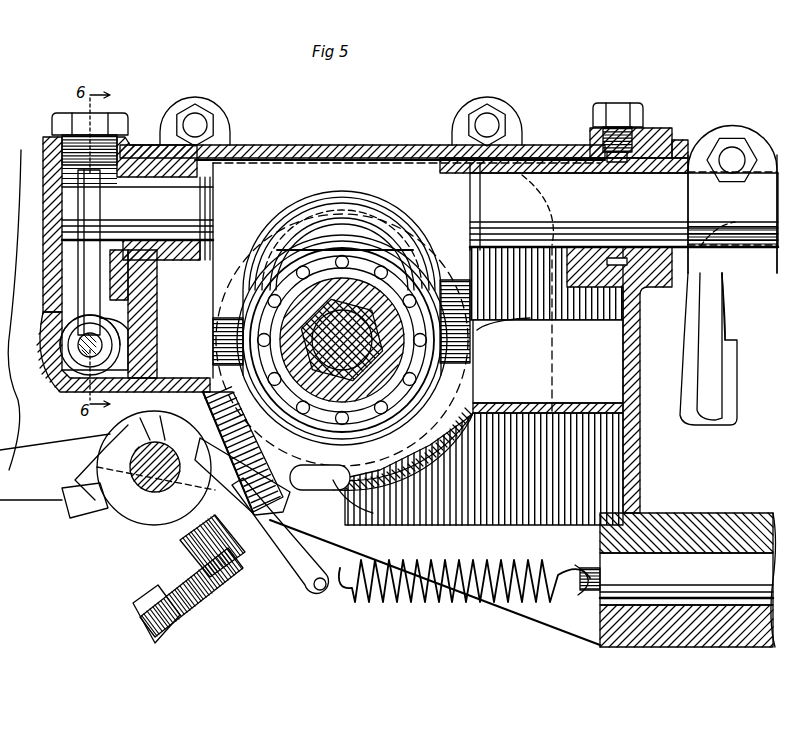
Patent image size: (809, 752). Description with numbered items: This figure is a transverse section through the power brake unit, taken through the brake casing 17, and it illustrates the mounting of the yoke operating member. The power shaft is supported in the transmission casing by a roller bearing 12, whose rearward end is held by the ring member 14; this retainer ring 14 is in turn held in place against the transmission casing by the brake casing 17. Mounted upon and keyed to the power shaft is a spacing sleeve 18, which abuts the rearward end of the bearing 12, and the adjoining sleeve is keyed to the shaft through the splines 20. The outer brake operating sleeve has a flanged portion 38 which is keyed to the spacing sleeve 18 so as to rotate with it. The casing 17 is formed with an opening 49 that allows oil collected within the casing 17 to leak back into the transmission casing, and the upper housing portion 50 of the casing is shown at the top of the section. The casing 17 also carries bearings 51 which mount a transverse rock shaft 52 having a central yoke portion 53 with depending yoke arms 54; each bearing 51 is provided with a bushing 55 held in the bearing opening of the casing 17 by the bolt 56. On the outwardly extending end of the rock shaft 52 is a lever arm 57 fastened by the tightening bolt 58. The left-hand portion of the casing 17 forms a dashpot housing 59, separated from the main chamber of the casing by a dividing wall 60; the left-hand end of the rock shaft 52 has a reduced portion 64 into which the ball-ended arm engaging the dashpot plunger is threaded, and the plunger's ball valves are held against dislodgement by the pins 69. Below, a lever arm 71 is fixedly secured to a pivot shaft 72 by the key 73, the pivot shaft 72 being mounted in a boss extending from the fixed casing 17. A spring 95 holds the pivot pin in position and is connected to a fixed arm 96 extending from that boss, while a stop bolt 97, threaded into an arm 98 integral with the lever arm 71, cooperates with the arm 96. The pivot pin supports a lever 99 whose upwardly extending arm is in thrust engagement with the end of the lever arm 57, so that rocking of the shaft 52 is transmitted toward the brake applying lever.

The roller bearing 12 is at (308, 426).
The ring member 14 is at (342, 340).
The brake casing 17 is at (428, 133).
The spacing sleeve 18 is at (265, 305).
The splines 20 is at (365, 262).
The flanged portion 38 is at (342, 256).
The opening 49 is at (365, 490).
The housing 50 is at (138, 146).
The bearings 51 is at (655, 147).
The rock shaft 52 is at (520, 195).
The yoke portion 53 is at (345, 195).
The yoke arms 54 is at (225, 343).
The bushing 55 is at (690, 152).
The bolt 56 is at (620, 110).
The lever arm 57 is at (718, 312).
The tightening bolt 58 is at (735, 165).
The dashpot housing 59 is at (60, 345).
The dividing wall 60 is at (157, 300).
The reduced portion 64 is at (82, 192).
The pins 69 is at (10, 310).
The lever arm 71 is at (40, 492).
The pivot shaft 72 is at (148, 486).
The key 73 is at (185, 500).
The spring 95 is at (513, 560).
The fixed arm 96 is at (292, 550).
The stop bolt 97 is at (172, 632).
The arm 98 is at (190, 545).
The lever 99 is at (698, 622).